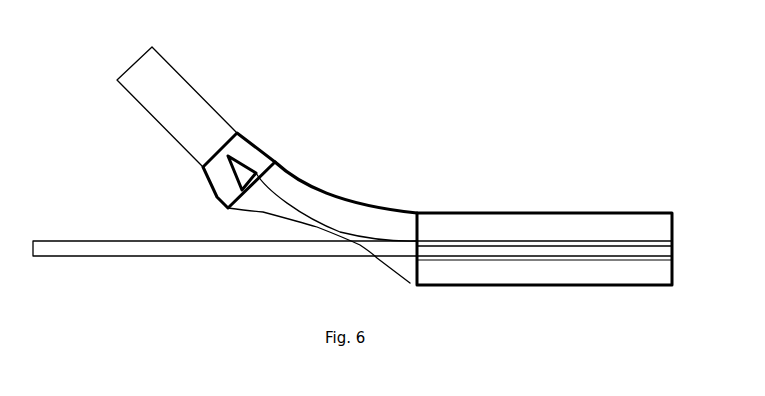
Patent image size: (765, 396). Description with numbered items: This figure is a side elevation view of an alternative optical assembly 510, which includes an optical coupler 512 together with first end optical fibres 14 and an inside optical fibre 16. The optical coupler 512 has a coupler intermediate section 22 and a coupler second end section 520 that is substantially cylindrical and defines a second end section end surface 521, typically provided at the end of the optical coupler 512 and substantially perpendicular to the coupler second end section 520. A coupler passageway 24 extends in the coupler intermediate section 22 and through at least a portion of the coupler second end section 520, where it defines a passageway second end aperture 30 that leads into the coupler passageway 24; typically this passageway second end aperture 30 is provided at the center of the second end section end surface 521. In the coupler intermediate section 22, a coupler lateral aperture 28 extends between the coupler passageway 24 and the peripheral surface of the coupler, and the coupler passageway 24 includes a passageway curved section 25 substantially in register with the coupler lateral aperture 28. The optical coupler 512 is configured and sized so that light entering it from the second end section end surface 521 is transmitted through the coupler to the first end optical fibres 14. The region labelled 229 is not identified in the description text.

The first end optical fibre 14 is at (167, 95).
The proximal arm portion 229 is at (243, 118).
The coupler intermediate section 22 is at (423, 200).
The passageway curved section 25 is at (336, 191).
The coupler passageway 24 is at (420, 237).
The coupler second end section 520 is at (677, 196).
The passageway second end aperture 30 is at (672, 242).
The inside optical fibre 16 is at (203, 252).
The coupler lateral aperture 28 is at (410, 283).
The optical coupler 512 is at (543, 294).
The second end section end surface 521 is at (673, 285).
The optical assembly 510 is at (566, 350).